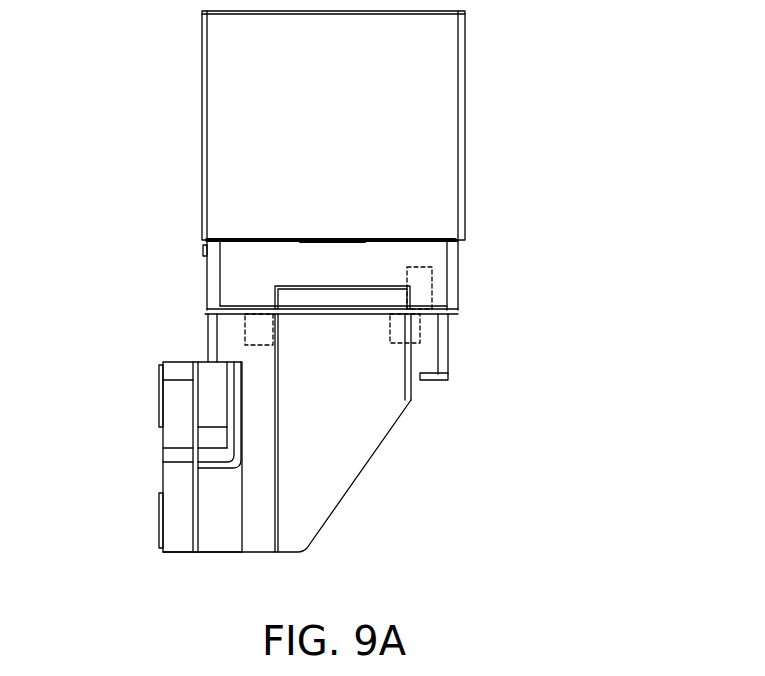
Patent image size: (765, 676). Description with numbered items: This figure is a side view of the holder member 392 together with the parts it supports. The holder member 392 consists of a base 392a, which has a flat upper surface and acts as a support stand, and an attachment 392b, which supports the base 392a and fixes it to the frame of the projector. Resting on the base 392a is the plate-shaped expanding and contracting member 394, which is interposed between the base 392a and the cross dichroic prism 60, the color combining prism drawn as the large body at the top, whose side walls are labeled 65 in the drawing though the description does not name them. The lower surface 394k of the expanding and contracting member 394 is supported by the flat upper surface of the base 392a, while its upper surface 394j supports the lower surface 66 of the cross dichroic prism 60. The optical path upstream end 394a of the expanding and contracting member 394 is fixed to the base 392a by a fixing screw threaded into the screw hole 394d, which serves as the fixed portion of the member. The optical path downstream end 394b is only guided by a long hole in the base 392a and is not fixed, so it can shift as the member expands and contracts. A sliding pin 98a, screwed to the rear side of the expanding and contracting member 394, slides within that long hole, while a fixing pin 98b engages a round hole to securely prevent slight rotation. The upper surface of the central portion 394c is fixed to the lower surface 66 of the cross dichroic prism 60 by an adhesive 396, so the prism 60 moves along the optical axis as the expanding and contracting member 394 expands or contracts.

The cross dichroic prism 60 is at (497, 101).
The ink cartridge body 65 is at (240, 105).
The lower surface 66 is at (270, 250).
The adhesive 396 is at (350, 240).
The expanding and contracting member 394 is at (185, 262).
The optical path upstream end 394a is at (440, 276).
The optical path downstream end 394b is at (227, 283).
The central portion 394c is at (355, 258).
The screw hole 394d is at (432, 288).
The upper surface 394j is at (420, 240).
The lower surface 394k is at (448, 326).
The holder member 392 is at (425, 455).
The base 392a is at (448, 337).
The attachment 392b is at (173, 477).
The sliding pin 98a is at (245, 336).
The fixing pin 98b is at (420, 337).